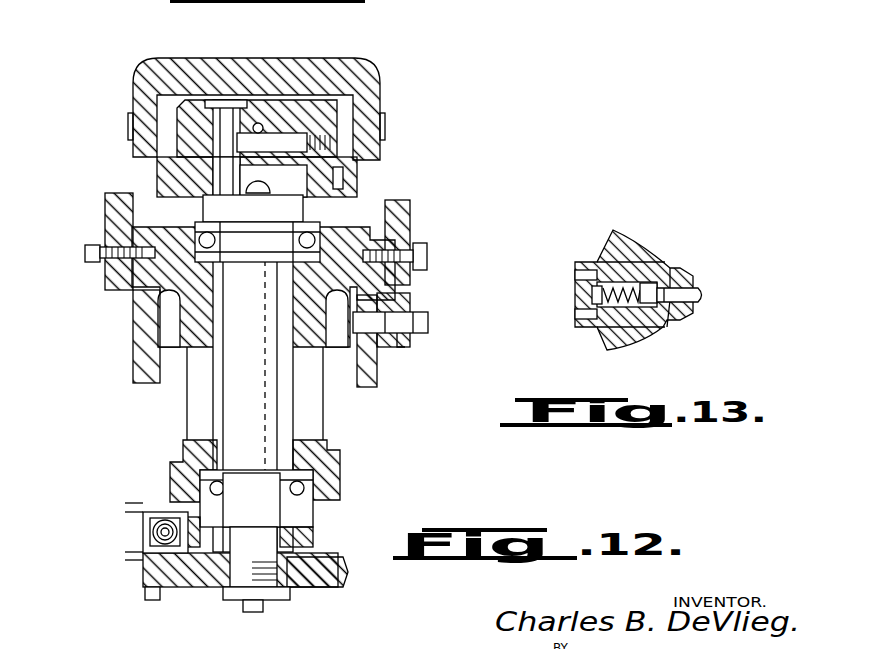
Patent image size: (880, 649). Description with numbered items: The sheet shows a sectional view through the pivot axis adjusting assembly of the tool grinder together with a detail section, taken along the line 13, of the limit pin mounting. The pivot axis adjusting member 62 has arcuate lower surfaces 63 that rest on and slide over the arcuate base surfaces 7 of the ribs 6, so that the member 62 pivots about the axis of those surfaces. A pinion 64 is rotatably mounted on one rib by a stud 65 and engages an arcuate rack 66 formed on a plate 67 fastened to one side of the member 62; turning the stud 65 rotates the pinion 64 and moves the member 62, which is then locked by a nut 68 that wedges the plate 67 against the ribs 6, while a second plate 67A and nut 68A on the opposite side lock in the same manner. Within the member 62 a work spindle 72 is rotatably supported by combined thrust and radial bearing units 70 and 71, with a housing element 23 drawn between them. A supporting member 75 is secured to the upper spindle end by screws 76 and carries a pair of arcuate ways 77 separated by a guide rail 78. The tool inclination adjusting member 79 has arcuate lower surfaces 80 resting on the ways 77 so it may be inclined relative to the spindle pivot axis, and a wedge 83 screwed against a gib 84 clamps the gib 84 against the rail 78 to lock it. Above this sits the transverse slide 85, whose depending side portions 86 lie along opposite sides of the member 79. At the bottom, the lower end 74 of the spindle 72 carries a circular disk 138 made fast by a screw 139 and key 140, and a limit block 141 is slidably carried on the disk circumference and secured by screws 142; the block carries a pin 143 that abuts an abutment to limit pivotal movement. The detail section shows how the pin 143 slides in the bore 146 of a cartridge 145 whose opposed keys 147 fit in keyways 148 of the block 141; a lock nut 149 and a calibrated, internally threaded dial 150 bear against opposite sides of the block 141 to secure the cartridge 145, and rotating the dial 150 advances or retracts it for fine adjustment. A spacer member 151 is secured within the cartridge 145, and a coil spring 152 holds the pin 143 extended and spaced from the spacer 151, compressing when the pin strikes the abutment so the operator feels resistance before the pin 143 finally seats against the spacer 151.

In FIG. 12, the transverse slide 85 is at (293, 60).
In FIG. 12, the depending side portions 86 is at (137, 98).
In FIG. 12, the tool inclination adjusting member 79 is at (345, 108).
In FIG. 12, the gib 84 is at (226, 152).
In FIG. 12, the wedge 83 is at (268, 126).
In FIG. 12, the guide rail 78 is at (332, 150).
In FIG. 12, the arcuate lower surfaces 80 is at (175, 178).
In FIG. 12, the supporting member 75 is at (360, 190).
In FIG. 12, the arcuate ways 77 is at (170, 160).
In FIG. 12, the screws 76 is at (340, 186).
In FIG. 12, the pivot axis adjusting member 62 is at (330, 287).
In FIG. 12, the work spindle 72 is at (270, 369).
In FIG. 12, the ribs 6 is at (143, 360).
In FIG. 12, the arcuate base surfaces 7 is at (142, 305).
In FIG. 12, the second plate 67A is at (105, 210).
In FIG. 12, the plate 67 is at (405, 225).
In FIG. 12, the arcuate lower surfaces 63 is at (135, 285).
In FIG. 12, the nut 68A is at (100, 250).
In FIG. 12, the nut 68 is at (427, 262).
In FIG. 12, the arcuate rack 66 is at (410, 316).
In FIG. 12, the stud 65 is at (428, 325).
In FIG. 12, the pinion 64 is at (400, 346).
In FIG. 12, the bearing housing 23 is at (288, 217).
In FIG. 12, the combined thrust and radial bearing unit 70 is at (217, 240).
In FIG. 12, the combined thrust and radial bearing unit 71 is at (231, 490).
In FIG. 12, the limit block 141 is at (145, 565).
In FIG. 13, the limit block 141 is at (633, 247).
In FIG. 12, the circular disk 138 is at (318, 590).
In FIG. 12, the lower end of the spindle 74 is at (268, 548).
In FIG. 12, the key 140 is at (283, 585).
In FIG. 12, the screw 139 is at (253, 612).
In FIG. 12, the screws 142 is at (152, 600).
In FIG. 12, the pin 143 is at (150, 530).
In FIG. 13, the pin 143 is at (690, 295).
In FIG. 12, the section line 13 is at (168, 510).
In FIG. 13, the lock nut 149 is at (588, 330).
In FIG. 13, the keyways 148 is at (610, 238).
In FIG. 13, the coil spring 152 is at (637, 345).
In FIG. 13, the keys 147 is at (610, 335).
In FIG. 13, the calibrated dial 150 is at (682, 262).
In FIG. 13, the bore 146 is at (692, 280).
In FIG. 13, the spacer member 151 is at (592, 297).
In FIG. 13, the cartridge 145 is at (703, 305).